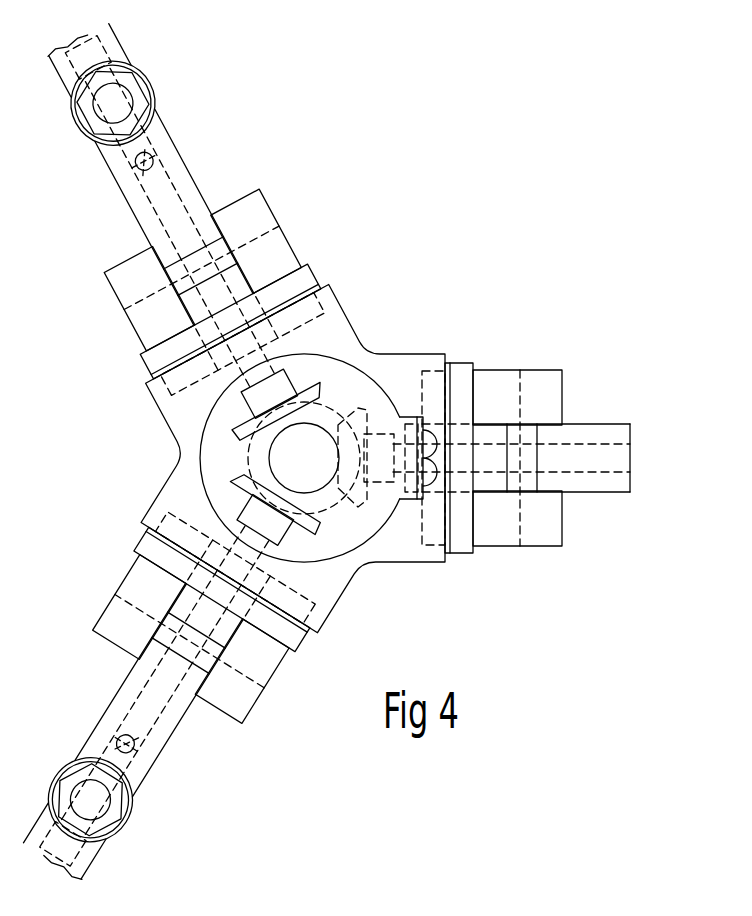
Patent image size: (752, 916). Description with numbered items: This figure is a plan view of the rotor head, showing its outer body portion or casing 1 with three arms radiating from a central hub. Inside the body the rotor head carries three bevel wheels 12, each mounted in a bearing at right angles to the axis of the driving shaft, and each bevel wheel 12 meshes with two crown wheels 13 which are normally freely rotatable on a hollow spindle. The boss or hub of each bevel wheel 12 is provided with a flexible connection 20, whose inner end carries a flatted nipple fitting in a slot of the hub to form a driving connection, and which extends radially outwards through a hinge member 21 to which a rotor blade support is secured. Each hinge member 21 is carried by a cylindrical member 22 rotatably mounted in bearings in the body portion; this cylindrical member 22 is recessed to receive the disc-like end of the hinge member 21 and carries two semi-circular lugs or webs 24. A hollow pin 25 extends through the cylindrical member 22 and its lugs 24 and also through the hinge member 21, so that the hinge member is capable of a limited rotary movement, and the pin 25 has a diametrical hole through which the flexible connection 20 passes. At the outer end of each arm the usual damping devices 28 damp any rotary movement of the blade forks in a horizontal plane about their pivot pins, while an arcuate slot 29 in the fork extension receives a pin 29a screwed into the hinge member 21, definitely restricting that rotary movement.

The outer body portion or casing 1 is at (323, 352).
The bevel wheel 12 is at (228, 432).
The crown wheel 13 is at (330, 408).
The flexible connection 20 is at (160, 218).
The hinge member 21 is at (203, 202).
The cylindrical member 22 is at (162, 362).
The semi-circular lugs or webs 24 is at (260, 222).
The hollow pin 25 is at (270, 264).
The damping device 28 is at (135, 142).
The arcuate slot 29 is at (130, 170).
The pin 29a is at (165, 165).